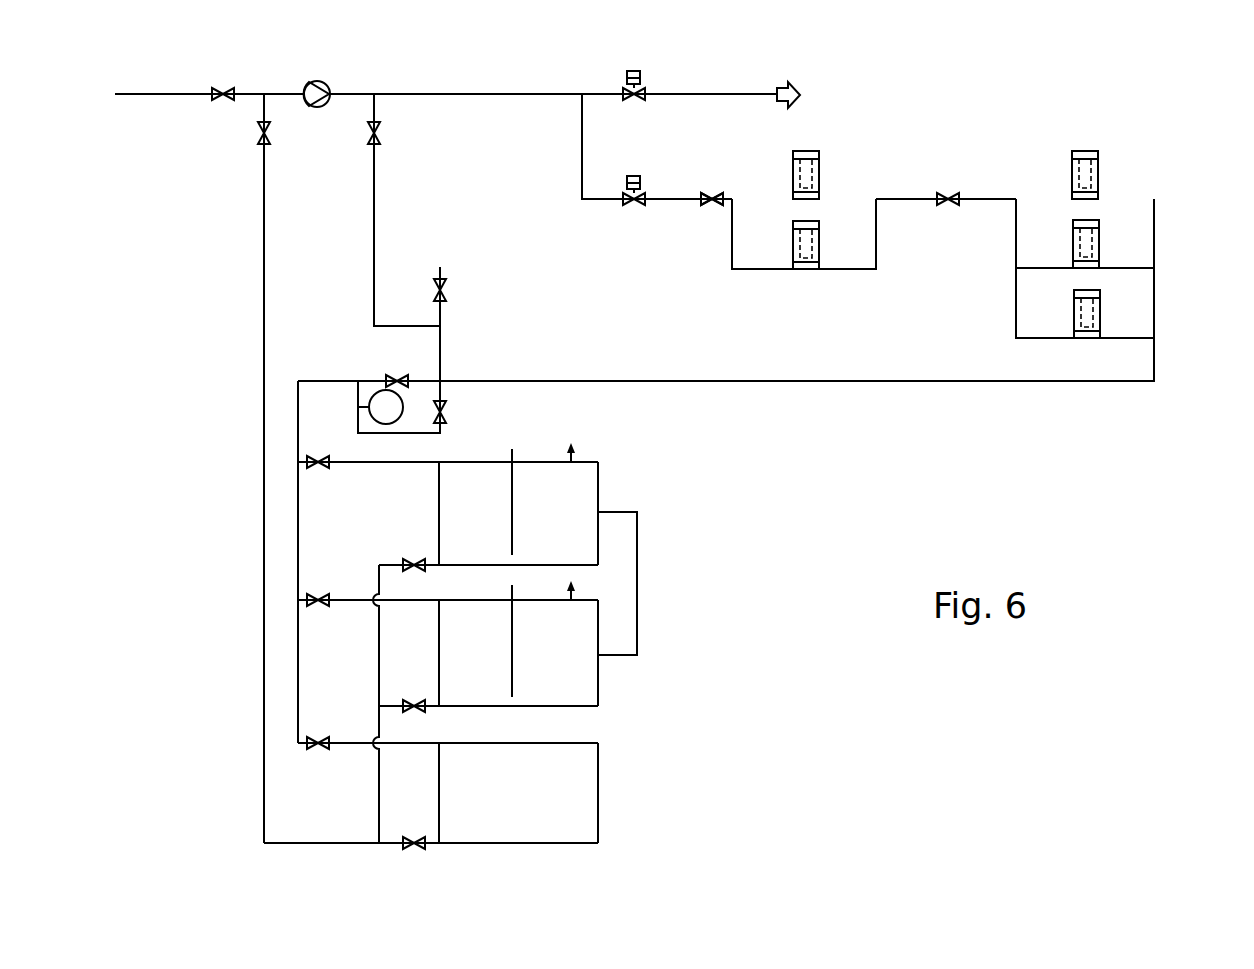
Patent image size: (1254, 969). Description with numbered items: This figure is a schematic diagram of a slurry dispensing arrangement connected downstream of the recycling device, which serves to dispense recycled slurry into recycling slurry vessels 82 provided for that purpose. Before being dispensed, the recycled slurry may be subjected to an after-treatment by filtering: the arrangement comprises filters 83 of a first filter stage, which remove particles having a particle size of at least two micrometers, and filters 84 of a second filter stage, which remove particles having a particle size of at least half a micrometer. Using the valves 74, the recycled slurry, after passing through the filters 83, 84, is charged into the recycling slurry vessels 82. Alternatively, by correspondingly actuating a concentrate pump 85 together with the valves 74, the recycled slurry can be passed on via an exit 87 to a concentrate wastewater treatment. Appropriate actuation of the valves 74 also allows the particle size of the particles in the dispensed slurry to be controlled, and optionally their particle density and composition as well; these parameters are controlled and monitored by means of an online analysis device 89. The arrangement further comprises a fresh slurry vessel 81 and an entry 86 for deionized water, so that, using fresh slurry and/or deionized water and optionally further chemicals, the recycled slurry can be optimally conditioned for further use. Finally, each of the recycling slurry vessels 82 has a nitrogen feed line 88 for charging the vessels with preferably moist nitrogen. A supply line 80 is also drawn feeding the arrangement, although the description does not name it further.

The valves 74 is at (641, 73).
The water supply line 80 is at (160, 99).
The fresh slurry vessel 81 is at (585, 798).
The recycling slurry vessels 82 is at (580, 553).
The filters of a first filter stage 83 is at (810, 184).
The filters of a second filter stage 84 is at (1097, 177).
The concentrate pump 85 is at (314, 108).
The entry for deionized water 86 is at (444, 268).
The exit 87 is at (795, 90).
The nitrogen feed line 88 is at (515, 448).
The online analysis device 89 is at (384, 402).